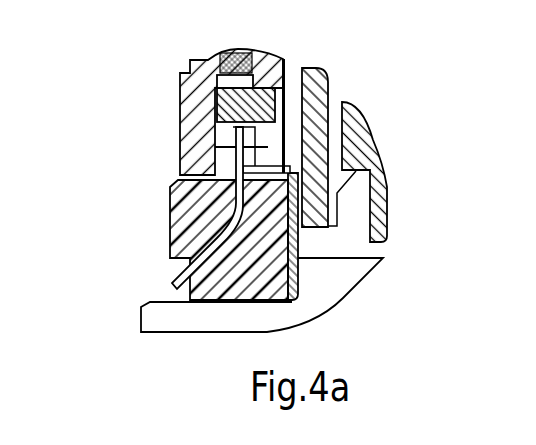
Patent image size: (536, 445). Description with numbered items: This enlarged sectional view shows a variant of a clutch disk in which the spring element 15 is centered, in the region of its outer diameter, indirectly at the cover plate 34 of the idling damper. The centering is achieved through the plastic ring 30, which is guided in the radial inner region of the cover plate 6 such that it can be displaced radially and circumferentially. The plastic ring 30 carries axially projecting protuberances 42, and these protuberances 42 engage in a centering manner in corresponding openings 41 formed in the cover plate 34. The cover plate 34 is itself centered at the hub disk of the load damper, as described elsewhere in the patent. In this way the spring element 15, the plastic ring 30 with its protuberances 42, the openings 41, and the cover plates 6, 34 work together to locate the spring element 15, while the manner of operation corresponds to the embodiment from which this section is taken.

The cover plate 6 is at (205, 61).
The spring element 15 is at (225, 240).
The plastic ring 30 is at (195, 202).
The cover plate of the idling damper 34 is at (283, 61).
The openings 41 is at (215, 148).
The axially projecting protuberances 42 is at (247, 107).